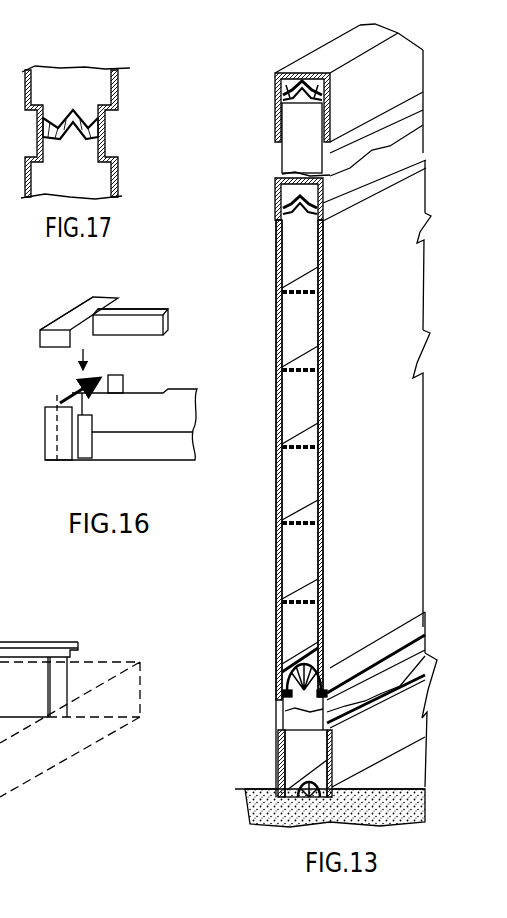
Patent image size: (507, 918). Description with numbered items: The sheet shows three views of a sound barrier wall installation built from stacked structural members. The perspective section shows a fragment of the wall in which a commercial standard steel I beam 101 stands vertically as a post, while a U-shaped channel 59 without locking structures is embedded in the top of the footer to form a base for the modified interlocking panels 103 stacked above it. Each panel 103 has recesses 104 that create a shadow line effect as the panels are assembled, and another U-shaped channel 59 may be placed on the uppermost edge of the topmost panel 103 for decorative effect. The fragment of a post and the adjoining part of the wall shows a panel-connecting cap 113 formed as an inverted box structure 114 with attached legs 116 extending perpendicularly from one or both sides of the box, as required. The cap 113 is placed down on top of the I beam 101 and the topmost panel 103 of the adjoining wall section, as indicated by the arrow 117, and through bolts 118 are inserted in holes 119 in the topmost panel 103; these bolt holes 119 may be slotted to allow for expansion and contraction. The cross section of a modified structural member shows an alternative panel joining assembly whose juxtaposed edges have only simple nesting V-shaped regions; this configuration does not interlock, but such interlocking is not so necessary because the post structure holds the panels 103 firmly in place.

In FIG. 13, the U-shaped channel 59 is at (277, 735).
In FIG. 16, the steel I beam 101 is at (47, 459).
In FIG. 16, the interlocking panel 103 is at (200, 445).
In FIG. 13, the interlocking panel 103 is at (410, 303).
In FIG. 17, the recess 104 is at (112, 131).
In FIG. 13, the recess 104 is at (383, 187).
In FIG. 16, the panel-connecting cap 113 is at (56, 352).
In FIG. 16, the inverted box structure 114 is at (72, 308).
In FIG. 16, the leg 116 is at (152, 312).
In FIG. 16, the arrow 117 is at (84, 356).
In FIG. 16, the through bolt 118 is at (146, 339).
In FIG. 16, the hole 119 is at (108, 451).